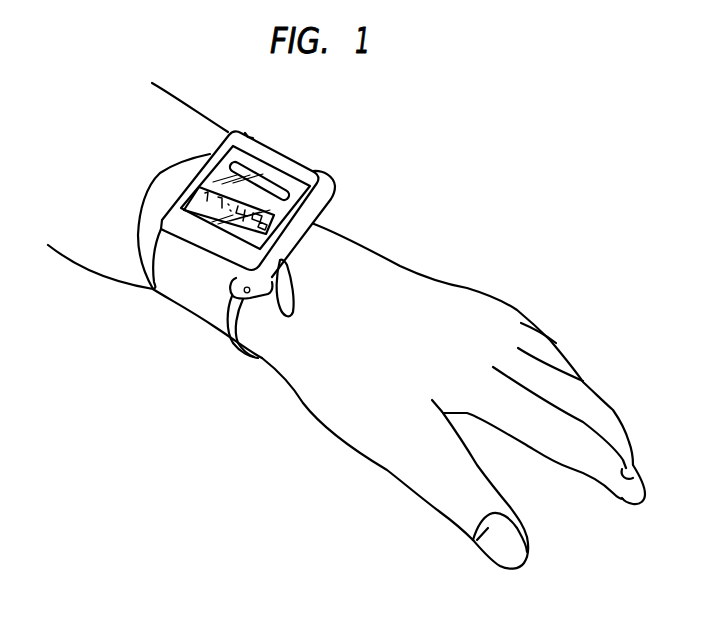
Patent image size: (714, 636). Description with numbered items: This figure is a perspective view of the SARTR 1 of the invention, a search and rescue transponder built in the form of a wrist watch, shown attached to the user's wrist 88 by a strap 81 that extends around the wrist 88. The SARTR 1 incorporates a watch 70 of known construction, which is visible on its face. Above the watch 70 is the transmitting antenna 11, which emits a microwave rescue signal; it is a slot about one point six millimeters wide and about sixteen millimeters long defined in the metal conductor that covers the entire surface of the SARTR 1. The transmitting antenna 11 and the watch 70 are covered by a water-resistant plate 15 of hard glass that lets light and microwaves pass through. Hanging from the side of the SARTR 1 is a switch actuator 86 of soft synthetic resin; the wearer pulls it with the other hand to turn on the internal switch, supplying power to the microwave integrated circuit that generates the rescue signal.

The SARTR 1 is at (262, 142).
The transmitting antenna 11 is at (275, 187).
The water-resistant plate 15 is at (295, 187).
The watch 70 is at (203, 193).
The strap 81 is at (193, 309).
The switch actuator 86 is at (293, 321).
The wrist 88 is at (430, 277).